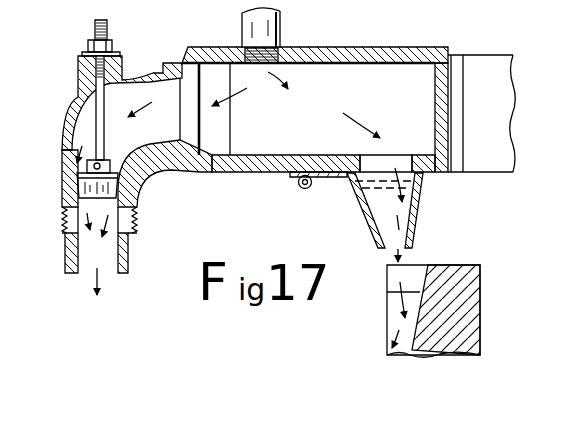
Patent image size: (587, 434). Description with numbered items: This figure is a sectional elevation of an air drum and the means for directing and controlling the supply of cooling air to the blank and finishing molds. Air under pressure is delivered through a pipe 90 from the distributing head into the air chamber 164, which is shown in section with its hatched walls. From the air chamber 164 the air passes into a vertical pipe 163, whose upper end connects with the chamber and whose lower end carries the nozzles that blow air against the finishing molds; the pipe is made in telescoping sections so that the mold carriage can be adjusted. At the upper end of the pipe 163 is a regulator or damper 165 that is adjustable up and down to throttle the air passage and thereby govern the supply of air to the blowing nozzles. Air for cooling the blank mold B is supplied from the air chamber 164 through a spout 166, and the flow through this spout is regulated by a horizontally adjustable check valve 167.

The pipe 90 is at (270, 27).
The vertical pipe 163 is at (128, 258).
The air chamber 164 is at (413, 57).
The regulator or damper 165 is at (110, 173).
The spout 166 is at (418, 216).
The check valve 167 is at (327, 180).
The blank mold B is at (458, 272).